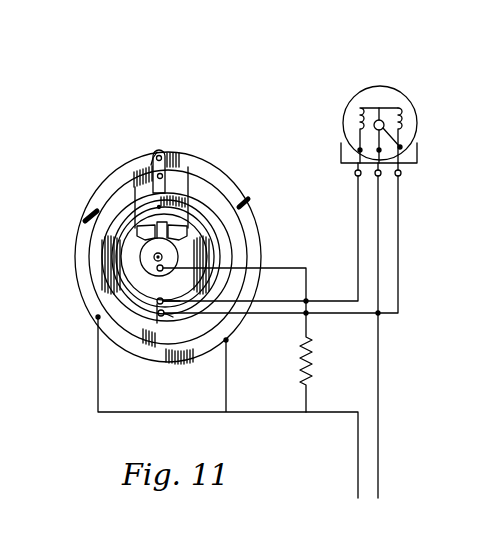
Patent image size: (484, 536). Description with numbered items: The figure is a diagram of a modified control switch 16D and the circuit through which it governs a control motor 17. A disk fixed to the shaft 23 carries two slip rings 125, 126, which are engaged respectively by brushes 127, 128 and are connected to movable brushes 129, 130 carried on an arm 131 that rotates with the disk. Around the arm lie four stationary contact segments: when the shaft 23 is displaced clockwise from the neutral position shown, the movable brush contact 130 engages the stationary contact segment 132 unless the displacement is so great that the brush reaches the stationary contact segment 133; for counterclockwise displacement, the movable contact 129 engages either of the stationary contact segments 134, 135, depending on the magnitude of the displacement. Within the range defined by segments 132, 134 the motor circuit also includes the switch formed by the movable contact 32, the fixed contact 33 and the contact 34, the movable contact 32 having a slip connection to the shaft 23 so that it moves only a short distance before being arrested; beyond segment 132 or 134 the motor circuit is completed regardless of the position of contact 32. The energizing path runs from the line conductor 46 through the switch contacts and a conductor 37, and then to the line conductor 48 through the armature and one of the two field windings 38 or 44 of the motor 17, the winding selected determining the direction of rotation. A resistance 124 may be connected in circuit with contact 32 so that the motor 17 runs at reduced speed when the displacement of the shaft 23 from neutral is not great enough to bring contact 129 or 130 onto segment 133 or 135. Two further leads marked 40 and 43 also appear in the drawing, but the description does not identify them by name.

The control switch 16D is at (201, 257).
The control motor 17 is at (410, 112).
The shaft 23 is at (163, 257).
The movable contact 32 is at (150, 257).
The fixed contact 33 is at (140, 178).
The contact 34 is at (195, 218).
The conductor 37 is at (399, 203).
The field winding 38 is at (403, 127).
The conductor 40 is at (401, 147).
The conductor 43 is at (358, 244).
The field winding 44 is at (355, 122).
The line conductor 46 is at (358, 448).
The line conductor 48 is at (380, 340).
The resistance 124 is at (311, 355).
The slip ring 125 is at (203, 219).
The slip ring 126 is at (211, 233).
The brush 127 is at (157, 322).
The brush 128 is at (176, 318).
The brush 129 is at (158, 152).
The brush contact 130 is at (162, 155).
The arm 131 is at (172, 181).
The stationary contact segment 132 is at (215, 172).
The stationary contact segment 133 is at (250, 230).
The stationary contact segment 134 is at (97, 207).
The stationary contact segment 135 is at (78, 268).